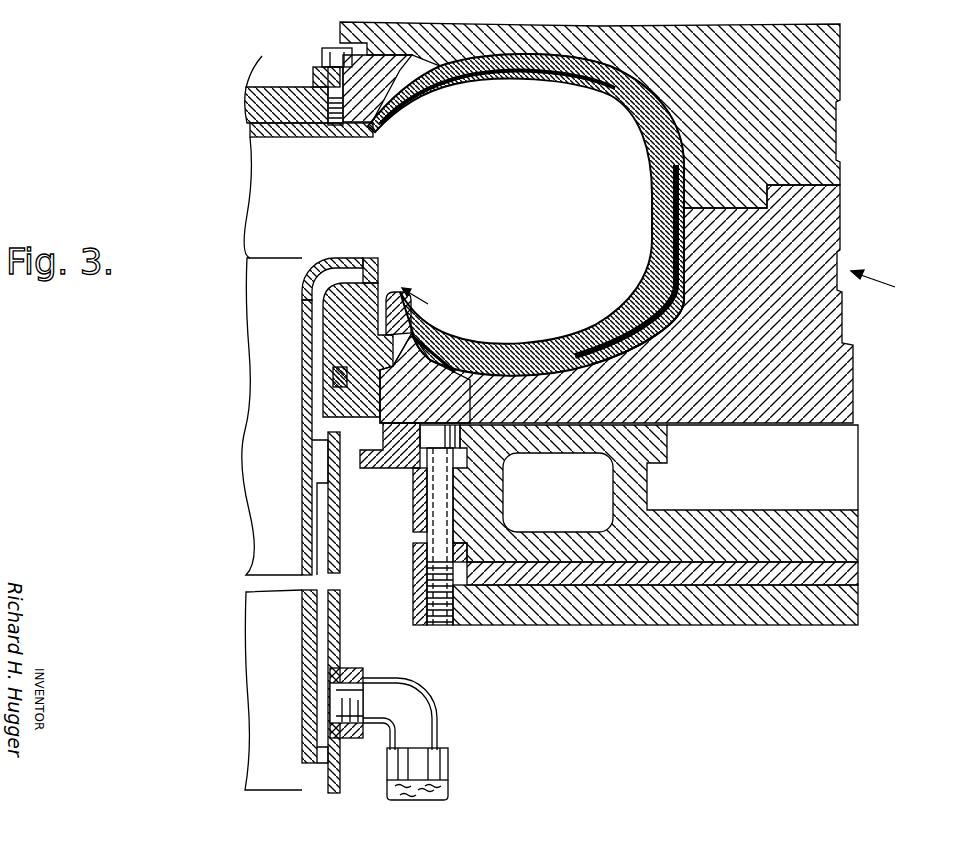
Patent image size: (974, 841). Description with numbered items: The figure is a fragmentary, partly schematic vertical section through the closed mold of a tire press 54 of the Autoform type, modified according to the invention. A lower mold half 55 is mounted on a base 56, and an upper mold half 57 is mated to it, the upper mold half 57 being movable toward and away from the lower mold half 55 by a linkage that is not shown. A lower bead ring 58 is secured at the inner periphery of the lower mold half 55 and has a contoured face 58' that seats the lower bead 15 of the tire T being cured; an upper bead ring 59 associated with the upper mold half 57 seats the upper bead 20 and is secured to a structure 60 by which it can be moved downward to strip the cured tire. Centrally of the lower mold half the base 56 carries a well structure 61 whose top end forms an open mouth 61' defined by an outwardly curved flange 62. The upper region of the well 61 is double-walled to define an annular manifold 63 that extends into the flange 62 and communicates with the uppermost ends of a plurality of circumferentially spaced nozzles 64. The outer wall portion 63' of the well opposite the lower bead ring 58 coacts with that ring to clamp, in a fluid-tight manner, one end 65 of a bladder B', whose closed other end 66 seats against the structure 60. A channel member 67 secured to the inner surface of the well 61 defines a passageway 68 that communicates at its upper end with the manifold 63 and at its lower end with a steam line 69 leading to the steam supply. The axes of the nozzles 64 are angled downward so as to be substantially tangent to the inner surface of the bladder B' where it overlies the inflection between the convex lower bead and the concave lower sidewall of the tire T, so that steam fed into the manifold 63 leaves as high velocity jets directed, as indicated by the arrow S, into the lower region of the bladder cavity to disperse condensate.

The lower bead 15 is at (396, 298).
The upper bead 20 is at (410, 117).
The tire press 54 is at (883, 289).
The lower mold half 55 is at (834, 229).
The base 56 is at (729, 624).
The upper mold half 57 is at (822, 135).
The lower bead ring 58 is at (425, 378).
The face 58' is at (436, 362).
The upper bead ring 59 is at (369, 130).
The structure 60 is at (282, 95).
The well structure 61 is at (354, 691).
The open mouth 61' is at (279, 395).
The outwardly curved flange 62 is at (339, 258).
The annular passageway or manifold 63 is at (288, 437).
The outer wall portion 63' is at (329, 350).
The nozzles 64 is at (375, 275).
The end of bladder 65 is at (340, 375).
The other end of bladder 66 is at (283, 136).
The channel member 67 is at (305, 643).
The passageway 68 is at (336, 527).
The steam line 69 is at (440, 718).
The bladder B' is at (625, 260).
The tire T is at (616, 299).
The arrow S is at (424, 302).